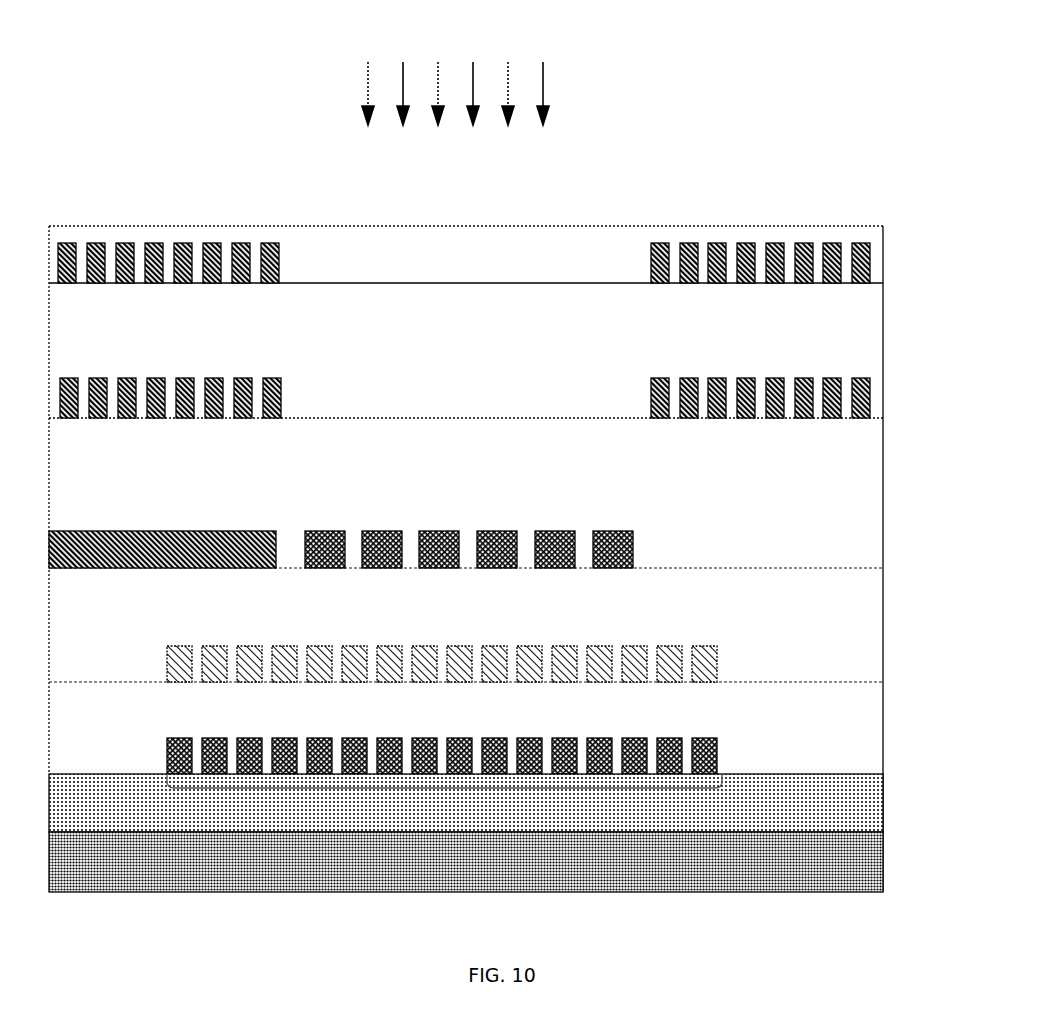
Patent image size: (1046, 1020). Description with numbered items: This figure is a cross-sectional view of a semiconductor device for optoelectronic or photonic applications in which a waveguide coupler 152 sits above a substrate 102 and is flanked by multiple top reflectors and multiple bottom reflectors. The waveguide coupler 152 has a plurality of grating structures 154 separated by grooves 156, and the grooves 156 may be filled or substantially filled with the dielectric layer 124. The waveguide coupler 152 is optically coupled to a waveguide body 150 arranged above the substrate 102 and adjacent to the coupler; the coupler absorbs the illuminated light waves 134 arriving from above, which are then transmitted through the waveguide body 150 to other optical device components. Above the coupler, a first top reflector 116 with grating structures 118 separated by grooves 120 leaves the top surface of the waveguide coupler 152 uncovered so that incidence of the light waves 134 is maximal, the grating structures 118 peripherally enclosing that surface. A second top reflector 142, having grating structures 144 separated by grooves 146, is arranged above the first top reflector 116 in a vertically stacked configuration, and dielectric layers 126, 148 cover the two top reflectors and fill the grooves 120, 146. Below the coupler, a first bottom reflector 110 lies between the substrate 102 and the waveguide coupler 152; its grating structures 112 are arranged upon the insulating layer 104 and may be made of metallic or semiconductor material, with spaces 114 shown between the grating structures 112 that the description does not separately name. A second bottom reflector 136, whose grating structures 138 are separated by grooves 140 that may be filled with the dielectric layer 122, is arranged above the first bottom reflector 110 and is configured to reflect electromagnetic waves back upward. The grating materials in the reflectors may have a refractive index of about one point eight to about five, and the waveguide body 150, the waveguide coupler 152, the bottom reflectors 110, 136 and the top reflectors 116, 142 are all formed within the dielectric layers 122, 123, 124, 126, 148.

The substrate 102 is at (873, 862).
The insulating layer 104 is at (873, 800).
The first bottom reflector 110 is at (450, 821).
The grating structures 112 is at (632, 754).
The first grating gaps 114 is at (693, 758).
The first top reflector 116 is at (278, 331).
The grating structures 118 is at (200, 383).
The grooves 120 is at (69, 378).
The dielectric layer 122 is at (862, 740).
The dielectric layer 123 is at (873, 623).
The dielectric layer 124 is at (873, 525).
The dielectric layer 126 is at (352, 325).
The light waves 134 is at (545, 56).
The second bottom reflector 136 is at (722, 616).
The grating structures 138 is at (317, 664).
The grooves 140 is at (444, 669).
The second top reflector 142 is at (58, 198).
The grating structures 144 is at (152, 245).
The grooves 146 is at (222, 257).
The dielectric layer 148 is at (558, 258).
The waveguide body 150 is at (136, 555).
The waveguide coupler 152 is at (309, 503).
The grating structures 154 is at (385, 556).
The grooves 156 is at (468, 557).